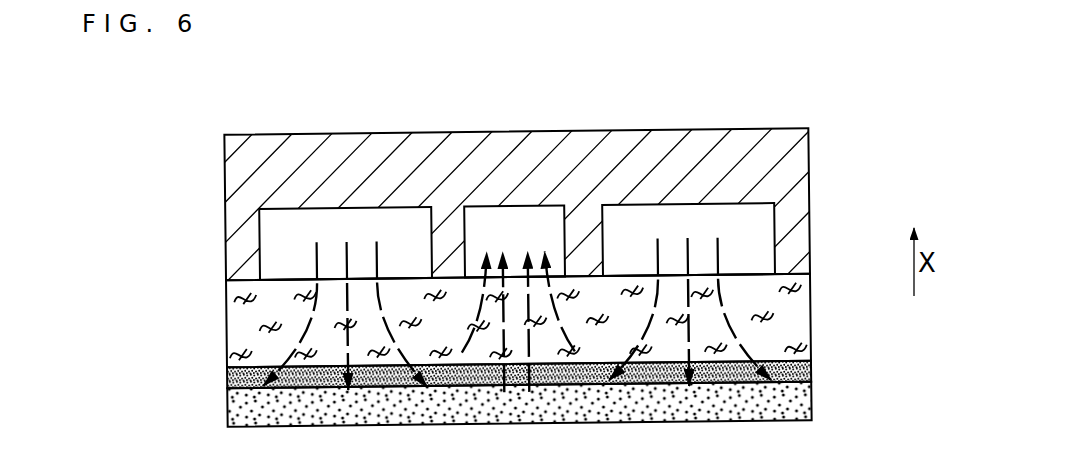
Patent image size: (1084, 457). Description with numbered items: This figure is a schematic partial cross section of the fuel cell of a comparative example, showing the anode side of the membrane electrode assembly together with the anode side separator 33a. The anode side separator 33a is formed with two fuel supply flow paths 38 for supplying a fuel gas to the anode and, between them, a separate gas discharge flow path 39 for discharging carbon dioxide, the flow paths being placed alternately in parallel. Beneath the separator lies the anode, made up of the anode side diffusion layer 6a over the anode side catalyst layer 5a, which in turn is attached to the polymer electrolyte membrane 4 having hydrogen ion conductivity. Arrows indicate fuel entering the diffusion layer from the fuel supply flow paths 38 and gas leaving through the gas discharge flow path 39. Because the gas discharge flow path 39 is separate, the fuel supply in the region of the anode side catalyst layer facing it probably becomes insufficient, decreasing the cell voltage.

The anode side separator 33a is at (784, 191).
The fuel supply flow path 38 is at (400, 225).
The gas discharge flow path 39 is at (515, 218).
The anode side diffusion layer 6a is at (783, 308).
The anode side catalyst layer 5a is at (798, 369).
The polymer electrolyte membrane 4 is at (792, 404).